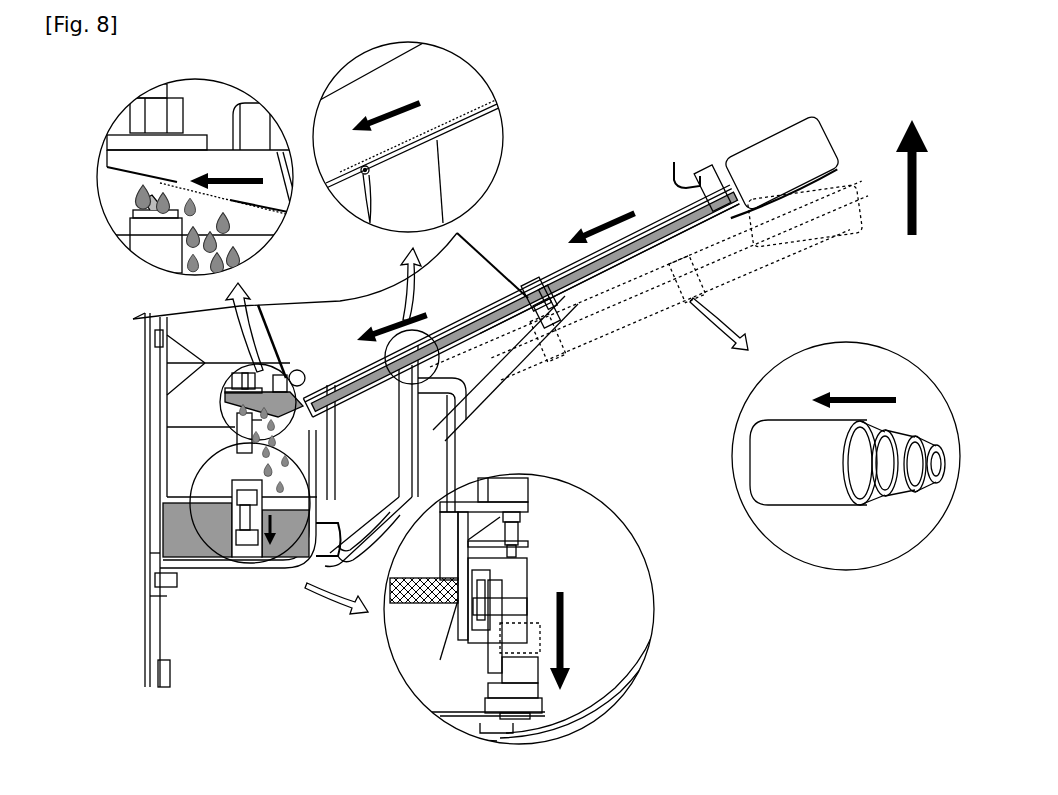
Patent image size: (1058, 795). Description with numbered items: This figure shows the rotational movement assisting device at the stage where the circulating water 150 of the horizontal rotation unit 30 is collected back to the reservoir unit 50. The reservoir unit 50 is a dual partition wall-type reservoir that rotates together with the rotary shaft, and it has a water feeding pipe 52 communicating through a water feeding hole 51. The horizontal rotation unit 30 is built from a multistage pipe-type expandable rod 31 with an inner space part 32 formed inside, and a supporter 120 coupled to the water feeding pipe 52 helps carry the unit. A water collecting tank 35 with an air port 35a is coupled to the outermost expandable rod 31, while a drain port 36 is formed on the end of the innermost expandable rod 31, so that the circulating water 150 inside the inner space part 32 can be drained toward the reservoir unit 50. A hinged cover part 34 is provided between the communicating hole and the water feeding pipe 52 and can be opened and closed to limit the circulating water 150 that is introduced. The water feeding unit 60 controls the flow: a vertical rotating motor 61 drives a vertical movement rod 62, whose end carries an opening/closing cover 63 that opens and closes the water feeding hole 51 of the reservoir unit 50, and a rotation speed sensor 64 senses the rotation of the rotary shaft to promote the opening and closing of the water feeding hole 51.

The horizontal rotation unit 30 is at (571, 200).
The expandable rod 31 is at (777, 488).
The inner space part 32 is at (640, 258).
The cover part 34 is at (366, 175).
The water collecting tank 35 is at (738, 150).
The air port 35a is at (676, 162).
The drain port 36 is at (160, 183).
The reservoir unit 50 is at (218, 600).
The water feeding hole 51 is at (510, 725).
The water feeding pipe 52 is at (307, 580).
The water feeding unit 60 is at (535, 589).
The vertical rotating motor 61 is at (512, 488).
The vertical movement rod 62 is at (495, 640).
The opening/closing cover 63 is at (520, 690).
The rotation speed sensor 64 is at (400, 625).
The supporter 120 is at (487, 380).
The circulating water 150 is at (352, 400).